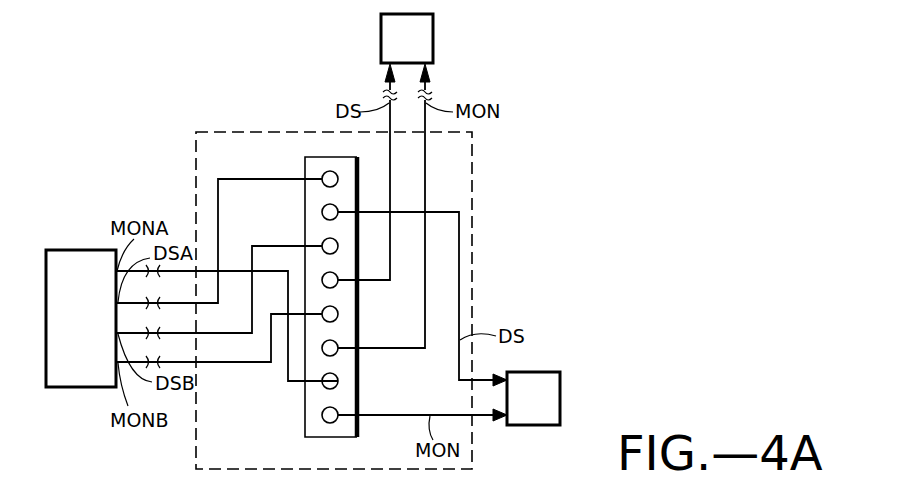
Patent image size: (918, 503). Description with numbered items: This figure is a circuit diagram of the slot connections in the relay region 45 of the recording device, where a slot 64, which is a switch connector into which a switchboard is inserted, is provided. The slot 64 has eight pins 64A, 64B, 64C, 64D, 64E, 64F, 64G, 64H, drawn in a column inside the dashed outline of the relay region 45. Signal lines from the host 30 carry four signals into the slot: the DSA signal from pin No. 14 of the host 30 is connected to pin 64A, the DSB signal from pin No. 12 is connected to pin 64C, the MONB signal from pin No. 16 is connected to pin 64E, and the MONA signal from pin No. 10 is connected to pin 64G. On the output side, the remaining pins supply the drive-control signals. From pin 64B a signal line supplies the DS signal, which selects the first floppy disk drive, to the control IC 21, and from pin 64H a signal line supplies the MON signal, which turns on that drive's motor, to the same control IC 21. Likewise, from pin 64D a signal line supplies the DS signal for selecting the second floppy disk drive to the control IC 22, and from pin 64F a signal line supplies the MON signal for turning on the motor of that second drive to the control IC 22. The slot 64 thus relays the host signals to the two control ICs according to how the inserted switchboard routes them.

The relay region 45 is at (253, 143).
The host 30 is at (60, 270).
The pin No. 10 of host 10 is at (212, 321).
The pin No. 14 of host 14 is at (204, 247).
The pin No. 12 of host 12 is at (204, 296).
The pin No. 16 of host 16 is at (204, 345).
The slot 64 is at (353, 162).
The pin 64a 64A is at (323, 174).
The pin 64b 64B is at (323, 209).
The pin 64c 64C is at (323, 242).
The pin 64d 64D is at (337, 284).
The pin 64e 64E is at (337, 318).
The pin 64f 64F is at (337, 352).
The pin 64g 64G is at (337, 386).
The pin 64h 64H is at (322, 415).
The control IC 22 is at (426, 40).
The control IC 21 is at (536, 416).